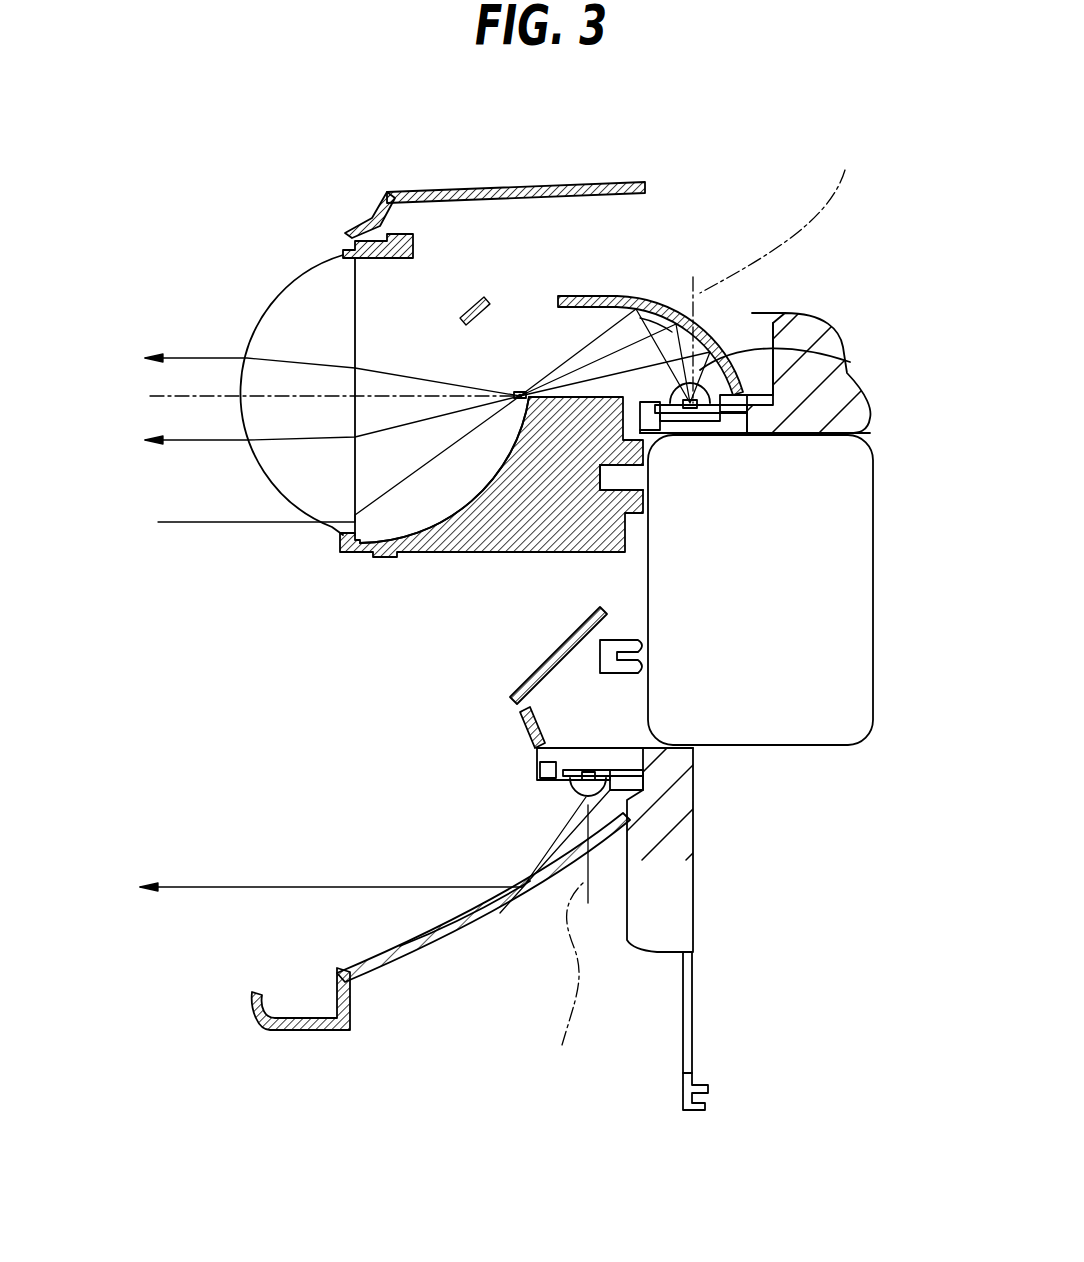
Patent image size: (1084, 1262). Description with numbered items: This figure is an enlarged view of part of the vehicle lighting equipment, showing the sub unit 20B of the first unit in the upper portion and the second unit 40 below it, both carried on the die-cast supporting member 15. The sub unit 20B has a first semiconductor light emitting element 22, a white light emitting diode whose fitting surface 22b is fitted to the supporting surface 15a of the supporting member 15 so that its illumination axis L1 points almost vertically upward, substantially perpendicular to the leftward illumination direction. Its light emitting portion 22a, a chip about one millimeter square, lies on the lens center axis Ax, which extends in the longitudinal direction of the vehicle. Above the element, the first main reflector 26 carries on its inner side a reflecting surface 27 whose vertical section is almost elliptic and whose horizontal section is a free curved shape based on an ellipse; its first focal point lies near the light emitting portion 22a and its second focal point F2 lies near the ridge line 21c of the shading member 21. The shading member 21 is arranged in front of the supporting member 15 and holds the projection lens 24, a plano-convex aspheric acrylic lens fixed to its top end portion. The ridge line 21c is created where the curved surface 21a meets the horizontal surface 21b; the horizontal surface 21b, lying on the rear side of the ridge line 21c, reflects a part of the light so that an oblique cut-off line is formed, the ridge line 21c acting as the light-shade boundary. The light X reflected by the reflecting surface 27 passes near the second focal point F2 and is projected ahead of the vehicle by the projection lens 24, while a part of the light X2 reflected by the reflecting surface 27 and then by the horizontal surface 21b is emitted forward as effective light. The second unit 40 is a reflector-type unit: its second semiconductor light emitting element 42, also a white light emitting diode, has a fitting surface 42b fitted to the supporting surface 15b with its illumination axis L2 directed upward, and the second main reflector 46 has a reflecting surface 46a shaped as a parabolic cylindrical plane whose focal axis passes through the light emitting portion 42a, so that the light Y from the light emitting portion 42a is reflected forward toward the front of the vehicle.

The sub unit 20B is at (198, 315).
The projection lens 24 is at (303, 333).
The shading member 21 is at (505, 560).
The curved surface 21a is at (497, 473).
The horizontal surface 21b is at (645, 482).
The ridge line 21c is at (521, 391).
The first semiconductor light emitting element 22 is at (847, 360).
The light emitting portion 22a is at (690, 428).
The fitting surface 22b is at (688, 428).
The first main reflector 26 is at (724, 316).
The reflecting surface 27 is at (676, 325).
The supporting member 15 is at (862, 372).
The supporting surface 15a is at (735, 428).
The supporting surface 15b is at (645, 752).
The second unit 40 is at (430, 802).
The second semiconductor light emitting element 42 is at (600, 815).
The light emitting portion 42a is at (573, 760).
The fitting surface 42b is at (630, 672).
The second main reflector 46 is at (478, 942).
The reflecting surface 46a is at (463, 913).
The lens center axis Ax is at (213, 390).
The second focal point F2 is at (515, 392).
The illumination axis L1 is at (776, 268).
The illumination axis L2 is at (565, 982).
The light X is at (217, 521).
The light X2 is at (180, 352).
The light Y is at (267, 890).